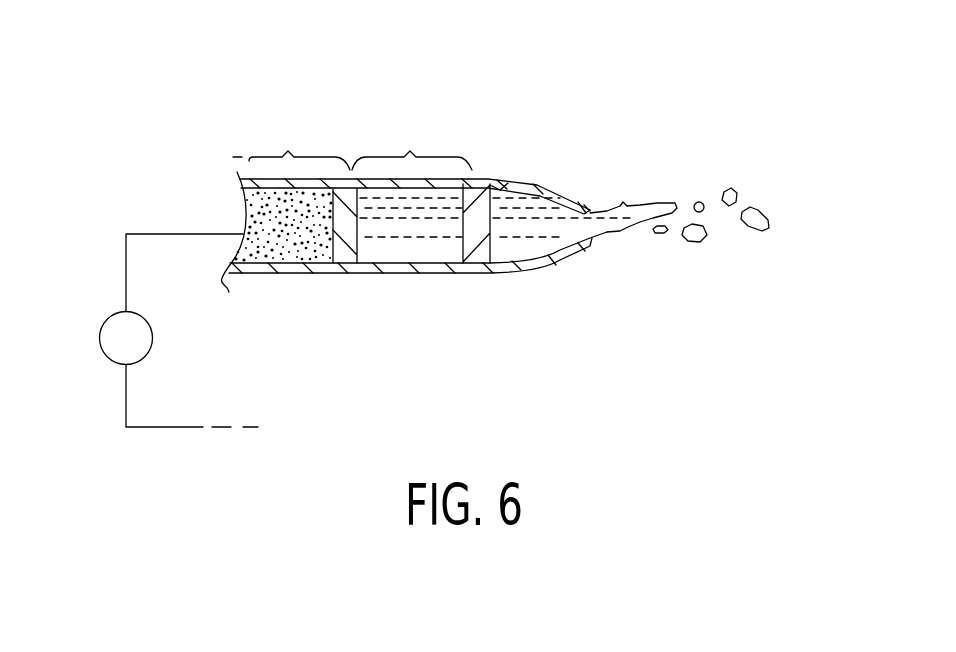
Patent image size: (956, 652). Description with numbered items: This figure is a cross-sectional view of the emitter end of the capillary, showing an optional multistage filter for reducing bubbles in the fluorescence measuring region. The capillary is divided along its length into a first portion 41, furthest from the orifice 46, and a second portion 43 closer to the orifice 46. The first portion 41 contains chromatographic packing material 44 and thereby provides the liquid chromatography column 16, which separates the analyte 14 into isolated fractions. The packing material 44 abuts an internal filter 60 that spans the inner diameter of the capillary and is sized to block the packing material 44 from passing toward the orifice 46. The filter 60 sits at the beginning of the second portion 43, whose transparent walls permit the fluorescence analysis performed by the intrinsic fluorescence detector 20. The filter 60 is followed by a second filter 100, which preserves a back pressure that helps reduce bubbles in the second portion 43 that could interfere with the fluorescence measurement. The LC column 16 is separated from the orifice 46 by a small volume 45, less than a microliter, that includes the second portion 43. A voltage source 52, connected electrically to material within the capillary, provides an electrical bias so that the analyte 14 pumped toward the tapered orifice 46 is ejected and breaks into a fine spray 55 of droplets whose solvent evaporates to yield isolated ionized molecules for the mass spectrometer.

The analyte 14 is at (413, 250).
The liquid chromatography column 16 is at (245, 98).
The intrinsic fluorescence detector 20 is at (372, 70).
The first portion 41 is at (291, 146).
The second portion 43 is at (412, 146).
The chromatographic packing material 44 is at (280, 240).
The small volume 45 is at (453, 250).
The orifice 46 is at (597, 185).
The voltage source 52 is at (108, 319).
The fine spray 55 is at (758, 192).
The internal filter 60 is at (345, 240).
The second filter 100 is at (492, 196).